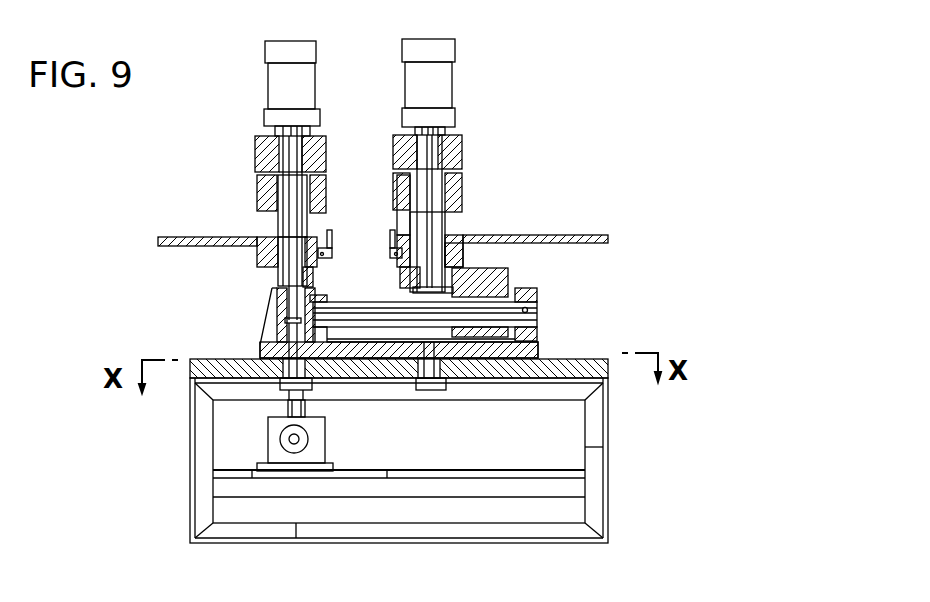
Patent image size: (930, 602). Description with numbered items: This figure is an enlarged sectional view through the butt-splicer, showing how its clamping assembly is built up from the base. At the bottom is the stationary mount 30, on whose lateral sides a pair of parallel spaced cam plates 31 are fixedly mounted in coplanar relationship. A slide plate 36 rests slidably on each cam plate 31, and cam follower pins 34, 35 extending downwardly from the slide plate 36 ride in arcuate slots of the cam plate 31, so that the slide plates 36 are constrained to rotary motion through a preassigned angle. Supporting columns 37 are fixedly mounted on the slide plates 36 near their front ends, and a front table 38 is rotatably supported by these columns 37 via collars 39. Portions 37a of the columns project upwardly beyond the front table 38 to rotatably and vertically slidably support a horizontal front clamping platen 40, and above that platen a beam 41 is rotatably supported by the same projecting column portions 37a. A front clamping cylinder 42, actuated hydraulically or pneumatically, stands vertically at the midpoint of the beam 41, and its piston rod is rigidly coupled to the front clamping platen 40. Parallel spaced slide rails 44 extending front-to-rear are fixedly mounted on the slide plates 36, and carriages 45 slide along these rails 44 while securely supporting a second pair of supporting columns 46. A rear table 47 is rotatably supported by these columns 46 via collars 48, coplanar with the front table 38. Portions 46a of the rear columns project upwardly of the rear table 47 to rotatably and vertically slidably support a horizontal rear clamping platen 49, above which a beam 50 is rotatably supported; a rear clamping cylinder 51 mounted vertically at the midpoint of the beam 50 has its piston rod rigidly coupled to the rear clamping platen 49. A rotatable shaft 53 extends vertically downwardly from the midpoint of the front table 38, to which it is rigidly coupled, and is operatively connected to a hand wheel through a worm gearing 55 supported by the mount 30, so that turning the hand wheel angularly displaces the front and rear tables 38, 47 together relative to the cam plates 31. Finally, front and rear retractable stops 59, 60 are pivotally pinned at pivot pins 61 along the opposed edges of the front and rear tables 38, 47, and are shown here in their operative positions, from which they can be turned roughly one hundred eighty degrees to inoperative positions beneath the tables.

The stationary mount 30 is at (527, 528).
The cam plate 31 is at (592, 358).
The cam follower pin 34 is at (313, 385).
The cam follower pin 35 is at (443, 387).
The slide plate 36 is at (259, 352).
The supporting column 37 is at (287, 276).
The projecting column portion 37a is at (285, 227).
The front table 38 is at (165, 237).
The collar 39 is at (262, 256).
The front clamping platen 40 is at (262, 183).
The beam 41 is at (258, 140).
The front clamping cylinder 42 is at (275, 47).
The slide rail 44 is at (536, 311).
The carriage 45 is at (490, 276).
The supporting column 46 is at (462, 261).
The projecting column portion 46a is at (433, 222).
The rear table 47 is at (586, 235).
The collar 48 is at (452, 253).
The rear clamping platen 49 is at (462, 179).
The beam 50 is at (448, 146).
The rear clamping cylinder 51 is at (440, 50).
The rotatable shaft 53 is at (288, 410).
The worm gearing 55 is at (272, 455).
The front retractable stop 59 is at (340, 232).
The rear retractable stop 60 is at (396, 243).
The pivot pin 61 is at (391, 254).